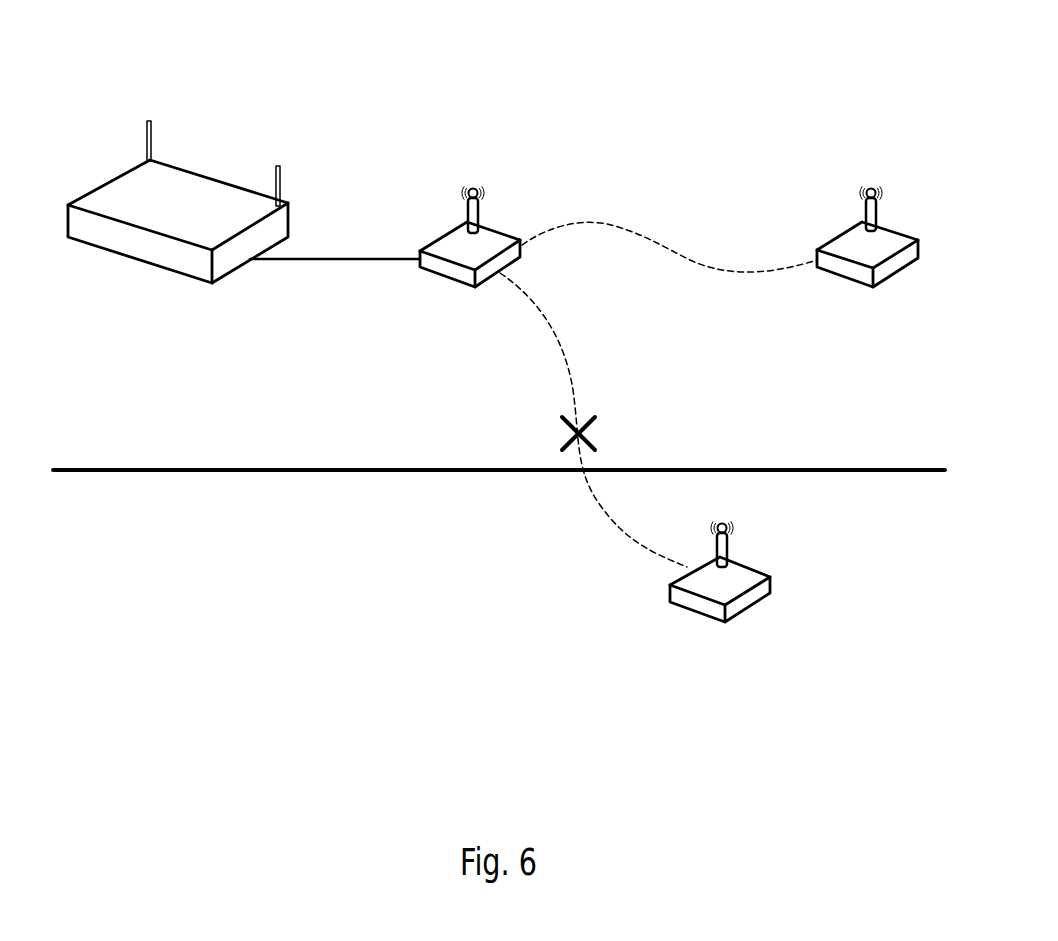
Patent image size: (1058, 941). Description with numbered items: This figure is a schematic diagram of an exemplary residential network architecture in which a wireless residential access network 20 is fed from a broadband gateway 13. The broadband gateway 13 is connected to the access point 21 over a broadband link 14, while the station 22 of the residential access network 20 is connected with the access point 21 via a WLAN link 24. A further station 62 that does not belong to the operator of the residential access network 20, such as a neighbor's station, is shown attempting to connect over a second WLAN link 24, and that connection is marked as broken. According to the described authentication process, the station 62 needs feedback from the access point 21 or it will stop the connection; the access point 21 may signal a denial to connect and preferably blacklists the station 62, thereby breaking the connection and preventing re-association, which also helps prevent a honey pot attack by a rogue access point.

The broadband gateway 13 is at (140, 260).
The broadband link 14 is at (333, 267).
The wireless residential access network 20 is at (797, 148).
The access point 21 is at (448, 277).
The station 22 is at (843, 277).
The WLAN link 24 is at (677, 250).
The station not belonging to the operator 62 is at (695, 613).